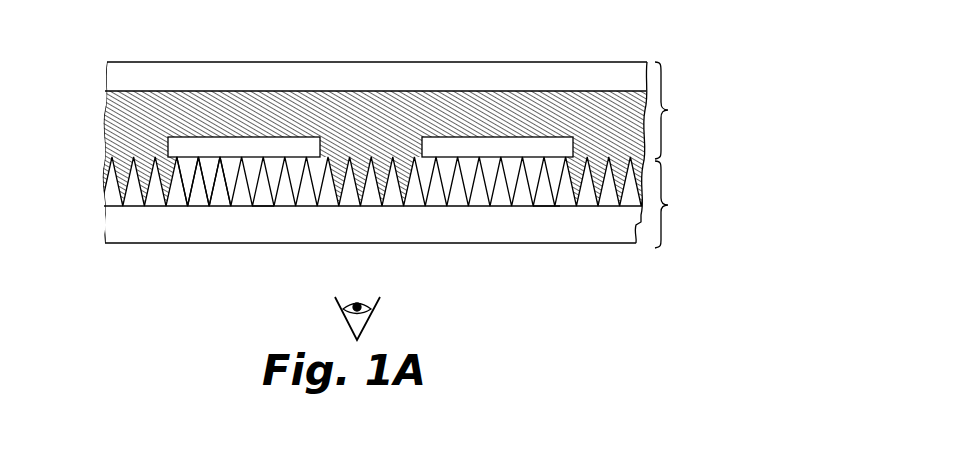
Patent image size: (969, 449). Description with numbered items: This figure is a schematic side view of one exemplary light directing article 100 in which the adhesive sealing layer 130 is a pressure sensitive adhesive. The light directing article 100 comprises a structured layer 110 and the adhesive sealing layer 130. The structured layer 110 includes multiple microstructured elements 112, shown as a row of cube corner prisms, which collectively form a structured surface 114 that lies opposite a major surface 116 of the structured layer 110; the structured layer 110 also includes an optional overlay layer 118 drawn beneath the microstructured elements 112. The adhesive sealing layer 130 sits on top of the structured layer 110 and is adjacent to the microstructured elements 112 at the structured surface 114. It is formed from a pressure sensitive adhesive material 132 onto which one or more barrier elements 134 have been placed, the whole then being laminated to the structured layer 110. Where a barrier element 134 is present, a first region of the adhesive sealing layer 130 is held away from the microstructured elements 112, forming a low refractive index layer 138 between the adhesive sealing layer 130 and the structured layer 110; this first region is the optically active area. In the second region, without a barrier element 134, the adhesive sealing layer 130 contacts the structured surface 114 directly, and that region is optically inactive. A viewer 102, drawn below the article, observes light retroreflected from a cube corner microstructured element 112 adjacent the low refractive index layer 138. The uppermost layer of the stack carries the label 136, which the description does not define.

The light directing article 100 is at (550, 47).
The viewer 102 is at (367, 318).
The structured layer 110 is at (687, 204).
The microstructured elements 112 is at (220, 195).
The structured surface 114 is at (108, 158).
The major surface 116 is at (546, 207).
The overlay layer 118 is at (110, 227).
The adhesive sealing layer 130 is at (686, 110).
The pressure sensitive adhesive material 132 is at (120, 112).
The barrier element 134 is at (233, 143).
The cover layer 136 is at (120, 77).
The low refractive index layer 138 is at (263, 193).